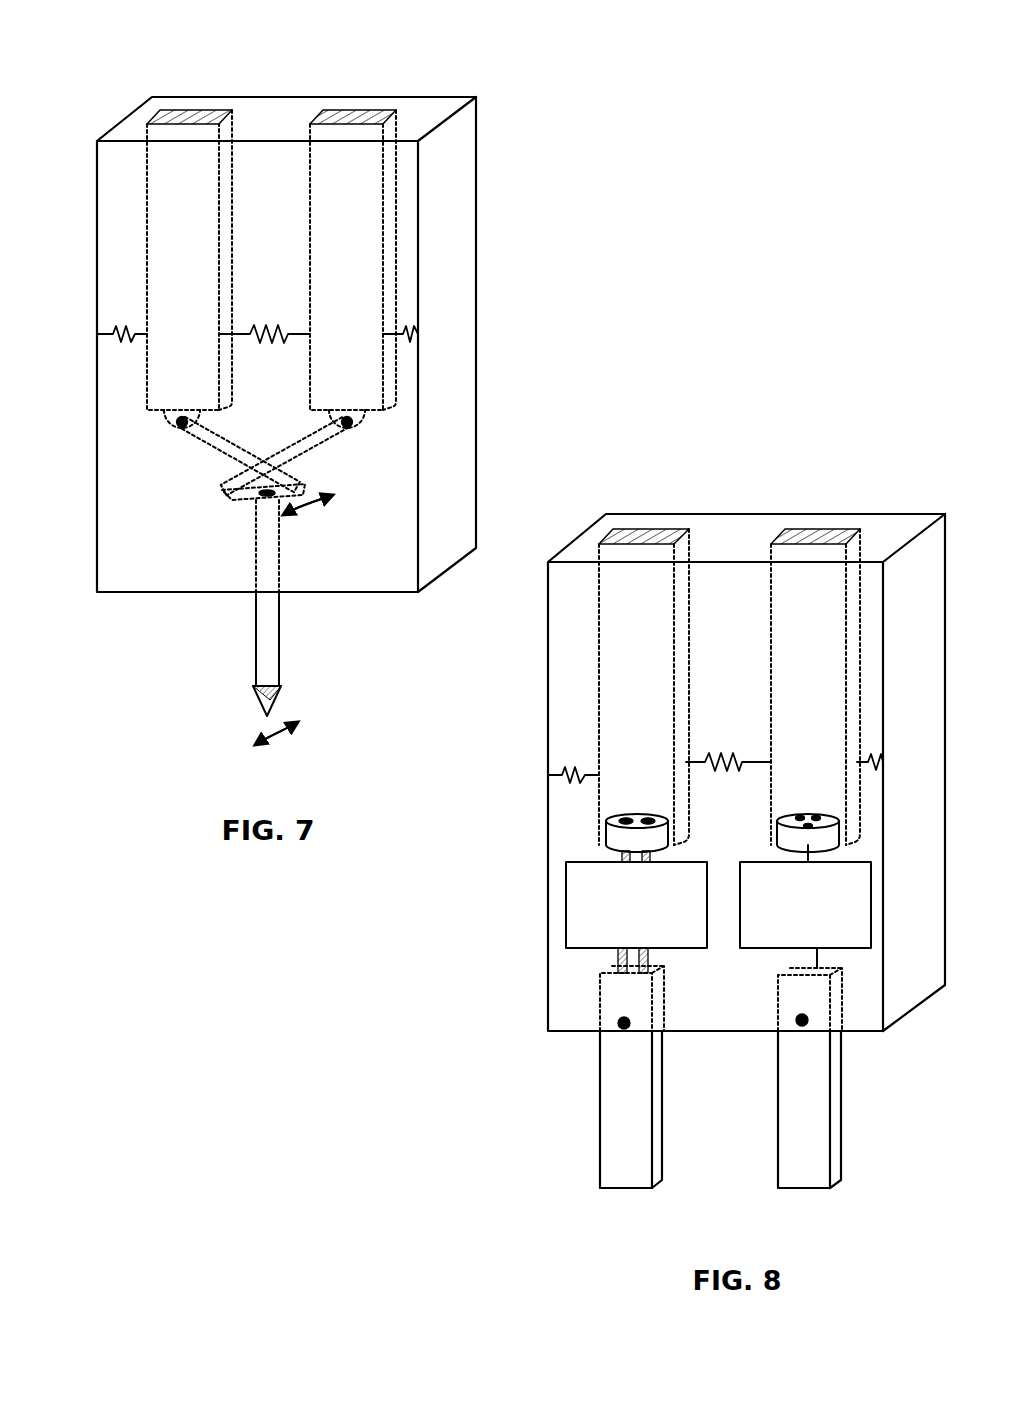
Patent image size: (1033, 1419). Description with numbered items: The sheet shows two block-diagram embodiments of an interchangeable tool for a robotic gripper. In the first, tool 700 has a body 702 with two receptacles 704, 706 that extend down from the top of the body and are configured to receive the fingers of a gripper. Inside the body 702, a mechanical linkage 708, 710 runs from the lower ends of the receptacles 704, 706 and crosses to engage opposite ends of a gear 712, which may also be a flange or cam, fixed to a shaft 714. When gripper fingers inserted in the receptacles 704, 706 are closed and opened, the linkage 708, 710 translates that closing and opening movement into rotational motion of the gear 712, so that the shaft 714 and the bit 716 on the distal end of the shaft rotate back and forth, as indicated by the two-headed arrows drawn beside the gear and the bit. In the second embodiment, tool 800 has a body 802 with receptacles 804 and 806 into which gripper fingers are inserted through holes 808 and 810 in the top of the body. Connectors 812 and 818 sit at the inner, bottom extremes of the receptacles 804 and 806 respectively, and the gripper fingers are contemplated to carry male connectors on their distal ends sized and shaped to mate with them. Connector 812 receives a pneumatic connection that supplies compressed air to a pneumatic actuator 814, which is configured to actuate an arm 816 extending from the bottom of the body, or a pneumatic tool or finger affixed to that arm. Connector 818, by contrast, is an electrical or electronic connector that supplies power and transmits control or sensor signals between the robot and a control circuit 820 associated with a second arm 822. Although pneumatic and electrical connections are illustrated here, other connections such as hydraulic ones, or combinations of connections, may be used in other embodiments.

In FIG. 7, the tool 700 is at (132, 80).
In FIG. 7, the body 702 is at (462, 168).
In FIG. 7, the receptacle 704 is at (146, 222).
In FIG. 7, the receptacle 706 is at (388, 272).
In FIG. 7, the mechanical linkage 708 is at (218, 452).
In FIG. 7, the mechanical linkage 710 is at (324, 445).
In FIG. 7, the gear 712 is at (254, 499).
In FIG. 7, the shaft 714 is at (278, 570).
In FIG. 7, the bit 716 is at (258, 692).
In FIG. 8, the tool 800 is at (718, 420).
In FIG. 8, the body 802 is at (893, 530).
In FIG. 8, the receptacle 804 is at (598, 660).
In FIG. 8, the receptacle 806 is at (852, 667).
In FIG. 8, the hole 808 is at (652, 536).
In FIG. 8, the hole 810 is at (808, 536).
In FIG. 8, the connector 812 is at (616, 818).
In FIG. 8, the pneumatic actuator 814 is at (670, 950).
In FIG. 8, the arm 816 is at (598, 1107).
In FIG. 8, the connector 818 is at (824, 818).
In FIG. 8, the control circuit 820 is at (760, 950).
In FIG. 8, the arm 822 is at (833, 1127).